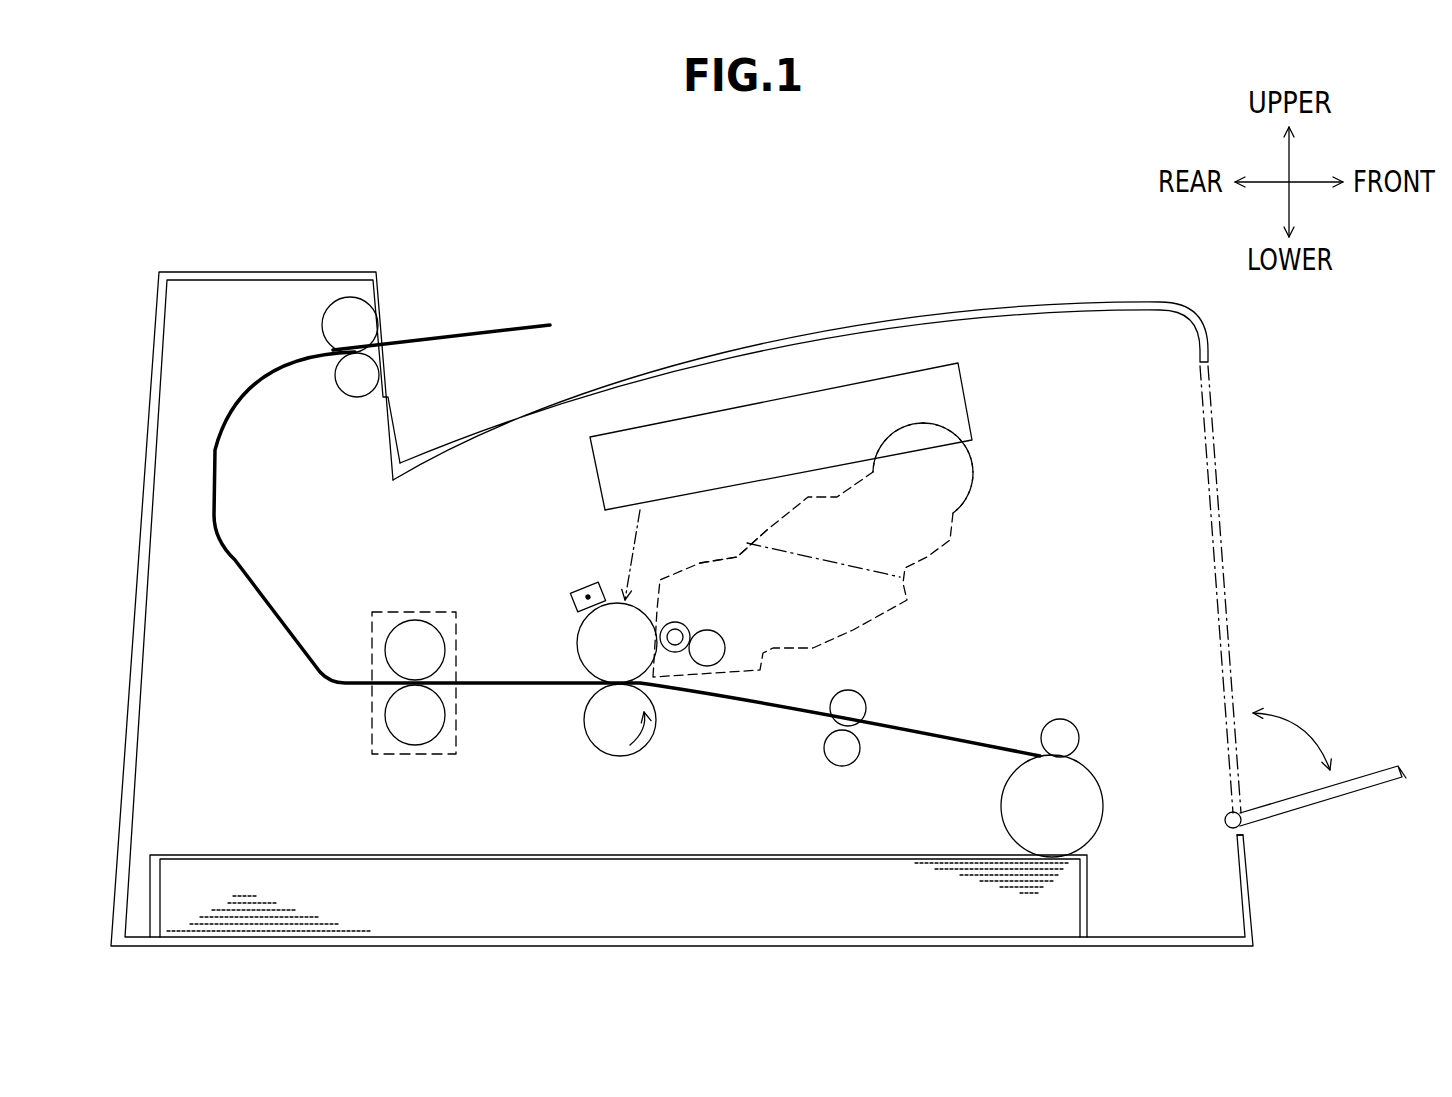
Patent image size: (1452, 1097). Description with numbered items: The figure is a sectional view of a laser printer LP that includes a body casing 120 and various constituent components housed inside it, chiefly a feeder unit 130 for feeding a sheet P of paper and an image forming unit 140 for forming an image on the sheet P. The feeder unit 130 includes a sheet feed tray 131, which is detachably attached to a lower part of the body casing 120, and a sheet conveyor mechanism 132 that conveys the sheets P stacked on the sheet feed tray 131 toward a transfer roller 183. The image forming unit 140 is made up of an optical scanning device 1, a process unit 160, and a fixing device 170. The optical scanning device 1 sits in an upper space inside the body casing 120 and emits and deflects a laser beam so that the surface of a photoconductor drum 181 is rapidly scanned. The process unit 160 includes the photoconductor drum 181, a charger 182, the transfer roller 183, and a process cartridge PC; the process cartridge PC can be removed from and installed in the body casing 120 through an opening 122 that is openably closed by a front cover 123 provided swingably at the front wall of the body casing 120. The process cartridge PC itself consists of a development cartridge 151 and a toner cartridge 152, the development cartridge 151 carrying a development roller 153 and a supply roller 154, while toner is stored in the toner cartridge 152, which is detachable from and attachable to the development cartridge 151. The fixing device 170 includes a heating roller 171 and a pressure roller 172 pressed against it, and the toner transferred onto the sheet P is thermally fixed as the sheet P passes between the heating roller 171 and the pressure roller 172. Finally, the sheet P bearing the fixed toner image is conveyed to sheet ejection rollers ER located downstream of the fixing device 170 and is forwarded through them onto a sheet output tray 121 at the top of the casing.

The optical scanning device 1 is at (847, 400).
The body casing 120 is at (157, 330).
The sheet output tray 121 is at (790, 321).
The opening 122 is at (1217, 361).
The front cover 123 is at (1365, 775).
The feeder unit 130 is at (1133, 783).
The sheet feed tray 131 is at (1243, 883).
The sheet conveyor mechanism 132 is at (1043, 690).
The image forming unit 140 is at (700, 395).
The development cartridge 151 is at (737, 553).
The toner cartridge 152 is at (945, 482).
The development roller 153 is at (683, 625).
The supply roller 154 is at (722, 641).
The process unit 160 is at (597, 525).
The fixing device 170 is at (452, 601).
The heating roller 171 is at (416, 630).
The pressure roller 172 is at (437, 716).
The photoconductor drum 181 is at (577, 636).
The charger 182 is at (584, 590).
The transfer roller 183 is at (592, 738).
The laser printer LP is at (295, 180).
The sheet ejection rollers ER is at (340, 307).
The sheet P is at (488, 335).
The process cartridge PC is at (942, 551).